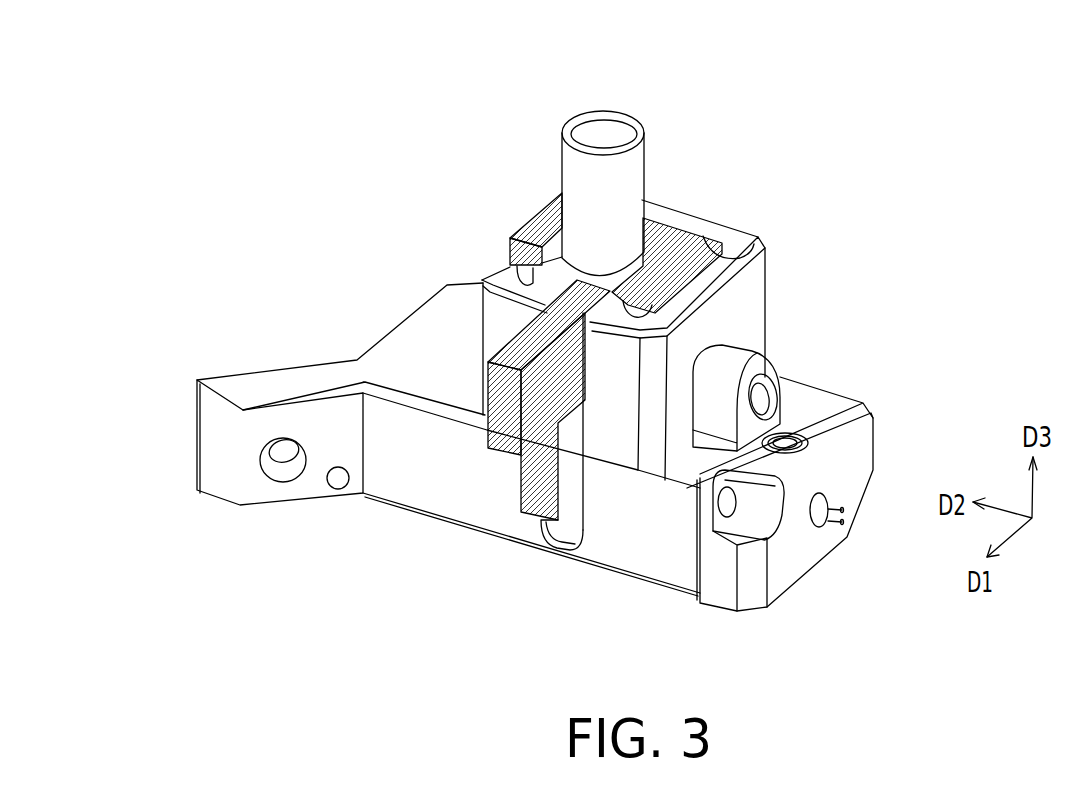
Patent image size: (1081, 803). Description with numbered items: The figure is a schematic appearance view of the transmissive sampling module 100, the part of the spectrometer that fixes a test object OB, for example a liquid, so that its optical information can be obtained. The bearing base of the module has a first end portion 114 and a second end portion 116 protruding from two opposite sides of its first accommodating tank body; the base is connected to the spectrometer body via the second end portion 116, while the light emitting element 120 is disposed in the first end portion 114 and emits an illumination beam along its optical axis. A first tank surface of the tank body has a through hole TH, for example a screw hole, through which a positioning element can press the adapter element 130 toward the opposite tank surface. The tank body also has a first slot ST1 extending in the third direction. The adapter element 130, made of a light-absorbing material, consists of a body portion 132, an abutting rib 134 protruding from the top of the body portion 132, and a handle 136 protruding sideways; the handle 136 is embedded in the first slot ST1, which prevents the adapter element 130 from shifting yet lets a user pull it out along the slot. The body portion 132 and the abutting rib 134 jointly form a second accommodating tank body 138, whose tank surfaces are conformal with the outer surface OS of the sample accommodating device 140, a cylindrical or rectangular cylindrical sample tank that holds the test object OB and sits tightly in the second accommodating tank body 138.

The transmissive sampling module 100 is at (934, 687).
The first end portion 114 is at (830, 405).
The second end portion 116 is at (410, 343).
The light emitting element 120 is at (832, 517).
The adapter element 130 is at (143, 582).
The body portion 132 is at (677, 240).
The abutting rib 134 is at (507, 248).
The handle 136 is at (498, 456).
The second accommodating tank body 138 is at (636, 241).
The sample accommodating device 140 is at (627, 113).
The through hole TH is at (766, 398).
The test object OB is at (595, 128).
The outer surface OS is at (586, 182).
The first slot ST1 is at (560, 544).